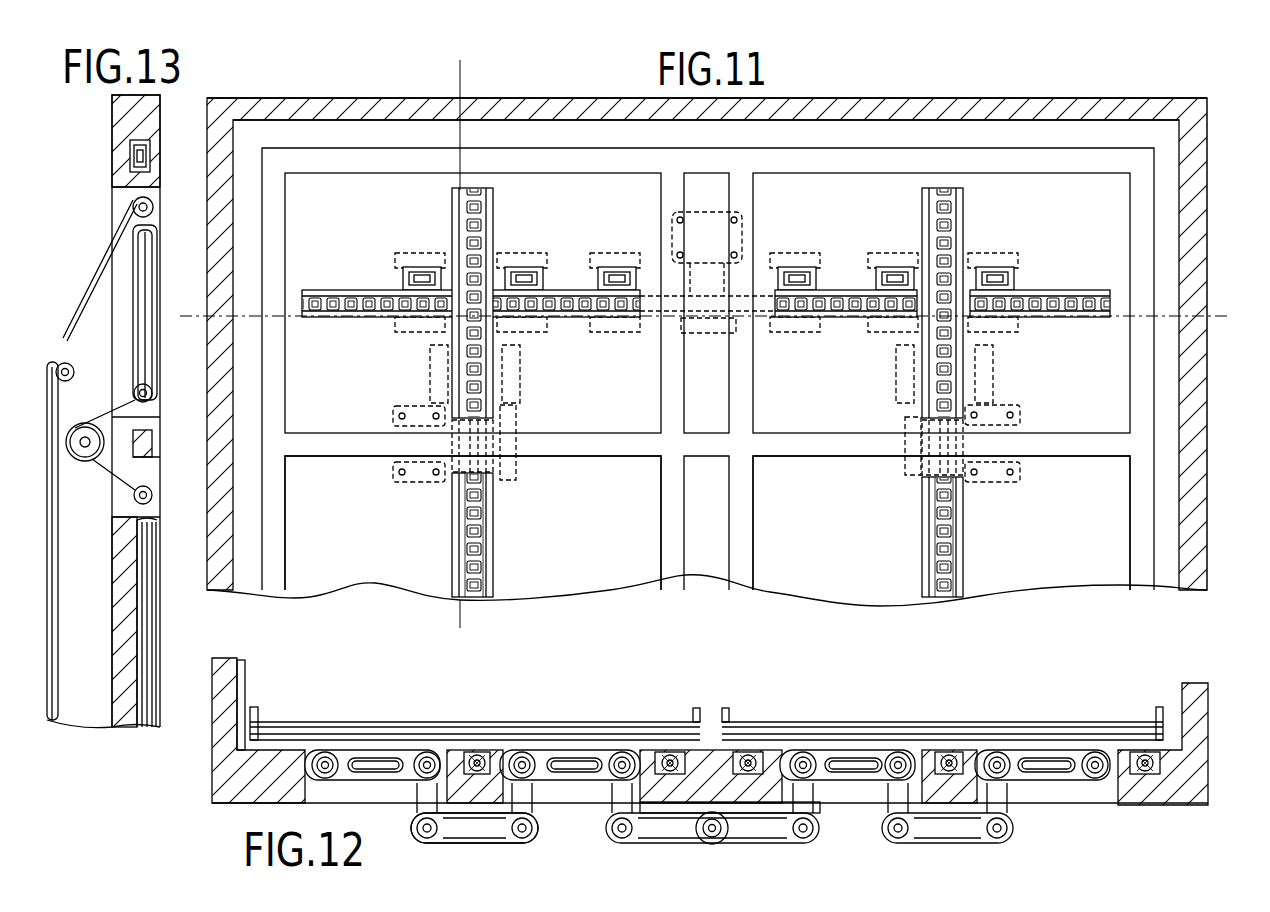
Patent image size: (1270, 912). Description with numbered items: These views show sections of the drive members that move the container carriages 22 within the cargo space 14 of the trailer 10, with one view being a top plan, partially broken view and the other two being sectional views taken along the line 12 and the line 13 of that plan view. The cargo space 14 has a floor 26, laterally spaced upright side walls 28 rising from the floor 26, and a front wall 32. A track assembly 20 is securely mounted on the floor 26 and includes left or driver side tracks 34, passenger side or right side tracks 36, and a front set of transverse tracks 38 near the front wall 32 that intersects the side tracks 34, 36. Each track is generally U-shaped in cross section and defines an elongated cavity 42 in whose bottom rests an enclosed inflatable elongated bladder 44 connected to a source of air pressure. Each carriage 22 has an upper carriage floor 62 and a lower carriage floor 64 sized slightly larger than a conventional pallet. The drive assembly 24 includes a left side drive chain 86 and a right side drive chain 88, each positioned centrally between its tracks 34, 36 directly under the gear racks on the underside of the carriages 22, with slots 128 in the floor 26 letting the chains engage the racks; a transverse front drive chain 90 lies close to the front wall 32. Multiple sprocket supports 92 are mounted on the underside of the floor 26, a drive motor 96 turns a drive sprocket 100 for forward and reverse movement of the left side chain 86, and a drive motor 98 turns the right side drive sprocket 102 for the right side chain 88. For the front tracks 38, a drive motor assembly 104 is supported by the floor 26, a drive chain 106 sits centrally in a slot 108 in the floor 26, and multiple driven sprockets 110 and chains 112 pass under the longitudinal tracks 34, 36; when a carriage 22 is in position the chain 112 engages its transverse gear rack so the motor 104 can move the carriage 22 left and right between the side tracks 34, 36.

In FIG. 11, the trailer 10 is at (877, 99).
In FIG. 12, the trailer 10 is at (1207, 740).
In FIG. 11, the section line 12- 12 is at (193, 287).
In FIG. 11, the section line 13- 13 is at (448, 72).
In FIG. 11, the cargo space 14 is at (290, 130).
In FIG. 11, the track assembly 20 is at (1108, 149).
In FIG. 12, the track assembly 20 is at (918, 768).
In FIG. 13, the track assembly 20 is at (160, 162).
In FIG. 12, the container carriage 22 is at (440, 722).
In FIG. 11, the drive assembly 24 is at (490, 228).
In FIG. 12, the drive assembly 24 is at (500, 843).
In FIG. 13, the drive assembly 24 is at (92, 278).
In FIG. 12, the floor 26 is at (252, 718).
In FIG. 11, the side wall 28 is at (1205, 460).
In FIG. 12, the side wall 28 is at (236, 668).
In FIG. 11, the front wall 32 is at (520, 98).
In FIG. 11, the left side tracks 34 is at (287, 530).
In FIG. 11, the right side tracks 36 is at (758, 545).
In FIG. 11, the front set of transverse tracks 38 is at (362, 173).
In FIG. 11, the elongated cavity 42 is at (560, 170).
In FIG. 12, the elongated cavity 42 is at (320, 750).
In FIG. 12, the elongated bladder 44 is at (860, 757).
In FIG. 13, the elongated bladder 44 is at (150, 622).
In FIG. 12, the upper carriage floor 62 is at (572, 720).
In FIG. 12, the lower carriage floor 64 is at (600, 733).
In FIG. 11, the left side drive chain 86 is at (492, 548).
In FIG. 12, the left side drive chain 86 is at (478, 752).
In FIG. 11, the right side drive chain 88 is at (962, 555).
In FIG. 12, the right side drive chain 88 is at (972, 768).
In FIG. 11, the front drive chain 90 is at (1020, 268).
In FIG. 13, the sprocket support 92 is at (92, 396).
In FIG. 11, the drive motor 96 is at (400, 472).
In FIG. 11, the drive motor 98 is at (1035, 430).
In FIG. 11, the drive sprocket 100 is at (512, 420).
In FIG. 13, the drive sprocket 100 is at (88, 460).
In FIG. 11, the right side drive sprocket 102 is at (908, 430).
In FIG. 11, the drive motor assembly 104 is at (745, 232).
In FIG. 12, the drive motor assembly 104 is at (700, 843).
In FIG. 11, the drive chain 106 is at (840, 289).
In FIG. 12, the drive chain 106 is at (570, 804).
In FIG. 11, the slot 108 is at (1065, 289).
In FIG. 12, the driven sprocket 110 is at (437, 843).
In FIG. 12, the chain 112 is at (750, 845).
In FIG. 11, the slot 128 is at (980, 360).
In FIG. 12, the slot 128 is at (532, 757).